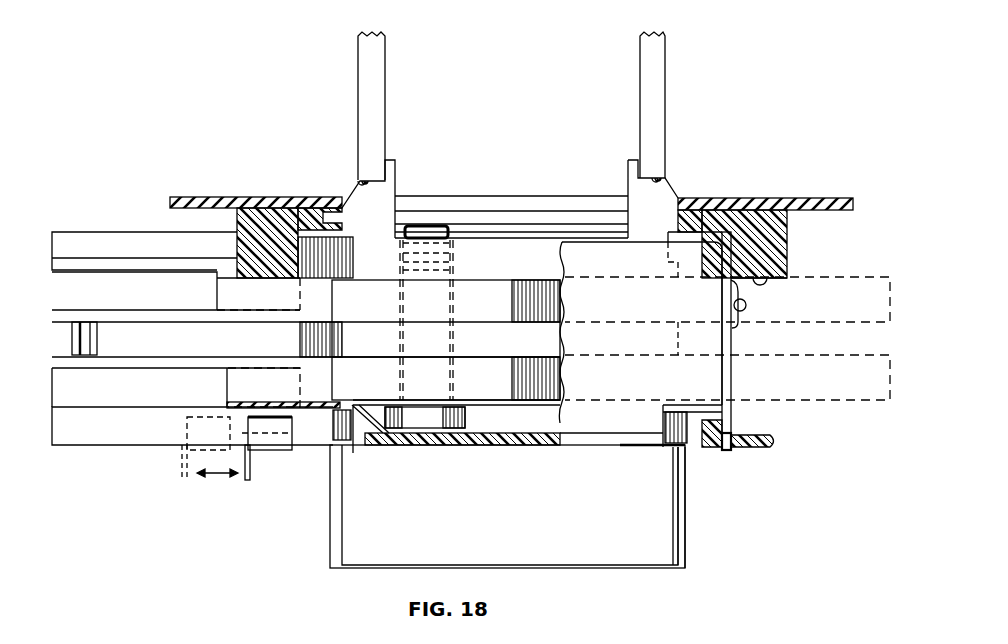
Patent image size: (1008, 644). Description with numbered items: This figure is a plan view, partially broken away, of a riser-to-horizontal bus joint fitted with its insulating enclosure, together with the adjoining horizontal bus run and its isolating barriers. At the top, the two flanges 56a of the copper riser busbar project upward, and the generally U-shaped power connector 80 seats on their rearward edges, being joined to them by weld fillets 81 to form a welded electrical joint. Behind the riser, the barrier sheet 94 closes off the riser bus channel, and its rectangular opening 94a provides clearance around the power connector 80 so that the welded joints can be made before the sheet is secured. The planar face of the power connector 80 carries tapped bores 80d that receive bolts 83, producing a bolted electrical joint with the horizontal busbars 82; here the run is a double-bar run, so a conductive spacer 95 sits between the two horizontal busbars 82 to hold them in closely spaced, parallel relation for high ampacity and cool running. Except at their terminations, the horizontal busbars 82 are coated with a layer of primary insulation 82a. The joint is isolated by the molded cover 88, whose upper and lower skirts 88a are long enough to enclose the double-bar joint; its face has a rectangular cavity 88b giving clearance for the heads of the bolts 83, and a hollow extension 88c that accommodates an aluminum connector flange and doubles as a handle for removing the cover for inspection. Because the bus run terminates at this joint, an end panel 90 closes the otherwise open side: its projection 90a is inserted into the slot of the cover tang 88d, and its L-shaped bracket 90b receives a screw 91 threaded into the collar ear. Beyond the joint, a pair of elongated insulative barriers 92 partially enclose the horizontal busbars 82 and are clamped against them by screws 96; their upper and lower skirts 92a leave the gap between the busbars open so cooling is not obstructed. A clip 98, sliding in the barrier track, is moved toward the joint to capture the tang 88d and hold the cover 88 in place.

The flange 56a is at (357, 80).
The power connector 80 is at (699, 327).
The tapped bore 80d is at (417, 240).
The weld fillet 81 is at (357, 183).
The horizontal busbar 82 is at (306, 342).
The layer of primary insulation 82a is at (333, 373).
The bolt 83 is at (427, 420).
The cover 88 is at (330, 528).
The skirt 88a is at (293, 228).
The rectangular cavity 88b is at (373, 430).
The hollow extension 88c is at (665, 533).
The tang 88d is at (775, 441).
The end panel 90 is at (730, 418).
The projection 90a is at (727, 450).
The L-shaped bracket 90b is at (740, 335).
The screw 91 is at (768, 290).
The barrier 92 is at (92, 230).
The skirt 92a is at (157, 293).
The barrier sheet 94 is at (207, 195).
The rectangular opening 94a is at (685, 196).
The conductive spacer 95 is at (446, 342).
The screw 96 is at (78, 338).
The clip 98 is at (272, 453).